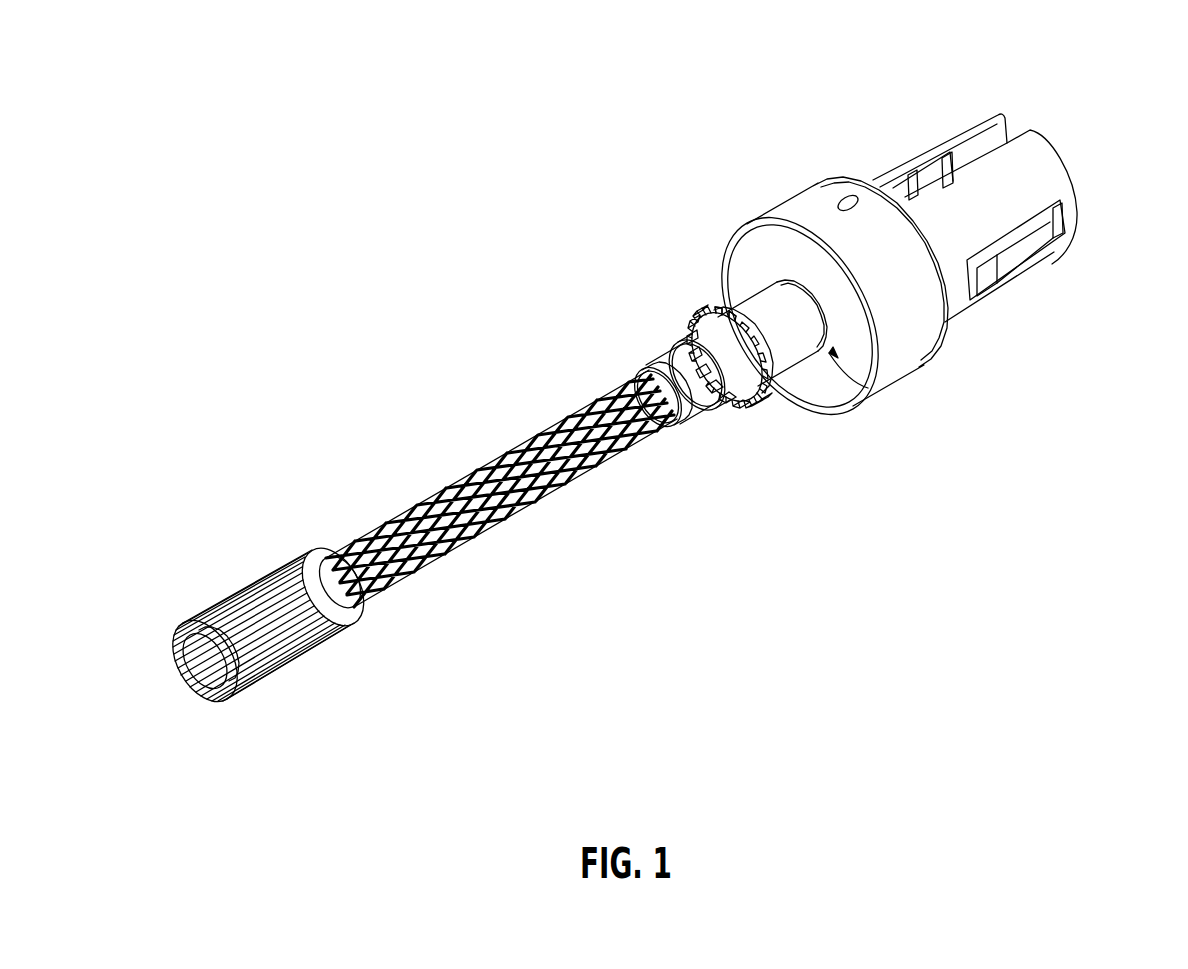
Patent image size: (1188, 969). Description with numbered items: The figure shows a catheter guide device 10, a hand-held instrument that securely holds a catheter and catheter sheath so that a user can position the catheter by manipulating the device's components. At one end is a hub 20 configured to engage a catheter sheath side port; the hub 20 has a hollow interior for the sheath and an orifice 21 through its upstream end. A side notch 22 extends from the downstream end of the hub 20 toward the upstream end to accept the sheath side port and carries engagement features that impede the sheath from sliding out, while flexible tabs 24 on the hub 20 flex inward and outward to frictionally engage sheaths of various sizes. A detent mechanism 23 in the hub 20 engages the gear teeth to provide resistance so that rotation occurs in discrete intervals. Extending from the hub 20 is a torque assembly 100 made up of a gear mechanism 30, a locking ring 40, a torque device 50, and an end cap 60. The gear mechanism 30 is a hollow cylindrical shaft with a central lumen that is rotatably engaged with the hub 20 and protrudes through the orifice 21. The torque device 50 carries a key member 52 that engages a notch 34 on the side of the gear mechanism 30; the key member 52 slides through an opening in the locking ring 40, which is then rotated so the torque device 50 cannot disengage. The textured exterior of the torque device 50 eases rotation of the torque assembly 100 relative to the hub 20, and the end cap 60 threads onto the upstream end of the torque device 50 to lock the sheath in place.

The catheter guide device 10 is at (1097, 122).
The hub 20 is at (967, 72).
The orifice 21 is at (888, 392).
The side notch 22 is at (1007, 143).
The detent mechanism 23 is at (857, 207).
The flexible tabs 24 is at (1010, 260).
The gear mechanism 30 is at (775, 355).
The notch 34 is at (680, 343).
The locking ring 40 is at (690, 318).
The torque device 50 is at (358, 535).
The key member 52 is at (724, 301).
The end cap 60 is at (217, 620).
The torque assembly 100 is at (802, 412).